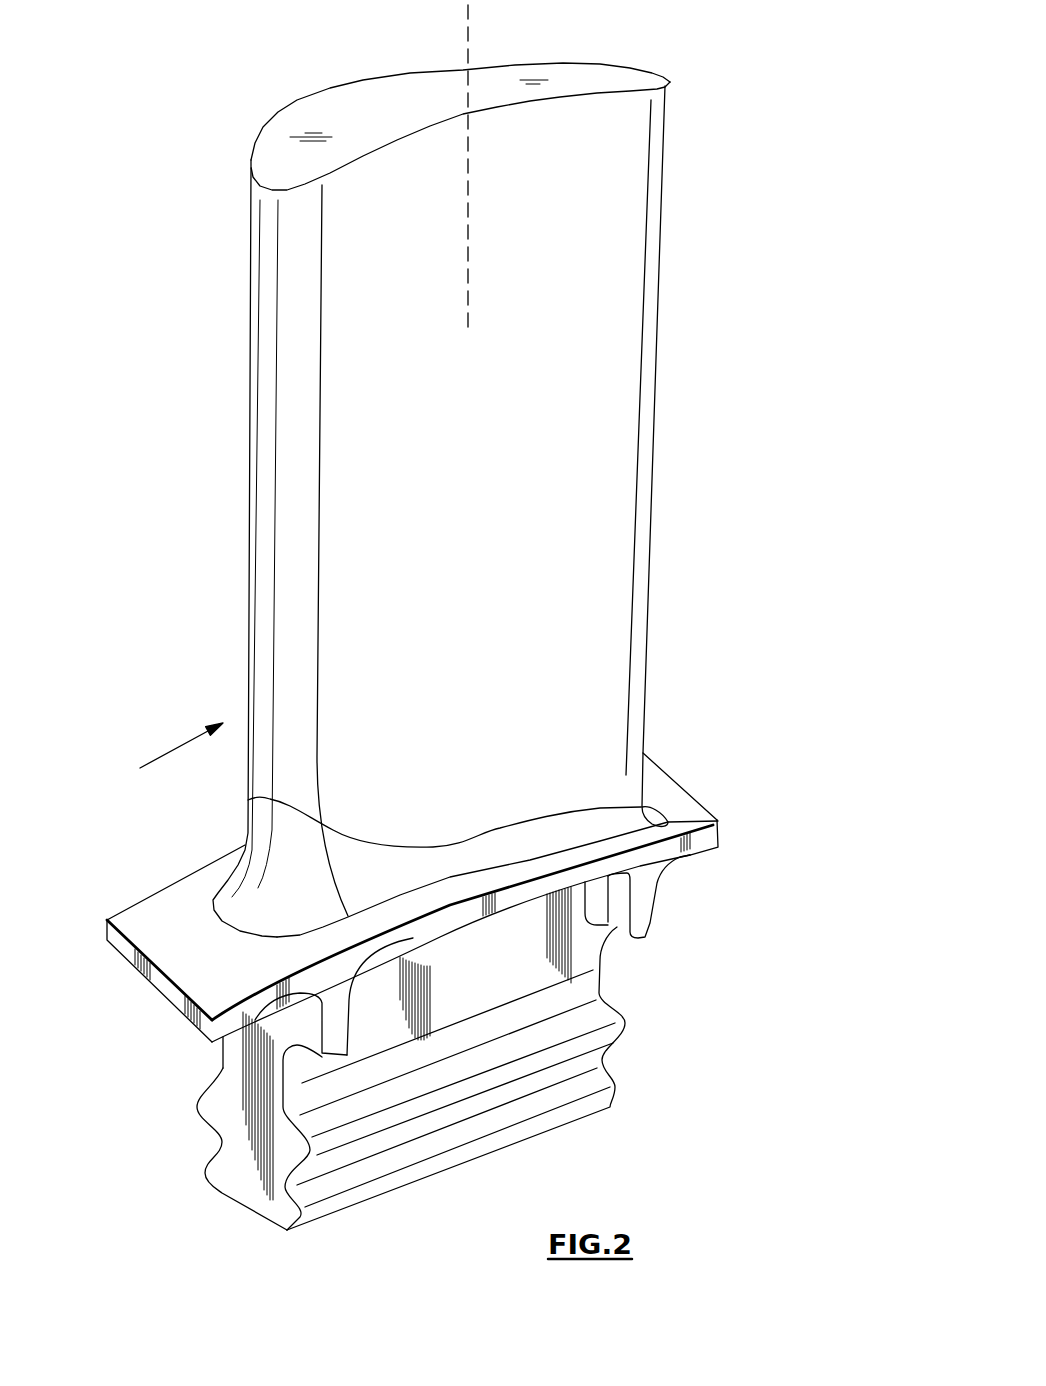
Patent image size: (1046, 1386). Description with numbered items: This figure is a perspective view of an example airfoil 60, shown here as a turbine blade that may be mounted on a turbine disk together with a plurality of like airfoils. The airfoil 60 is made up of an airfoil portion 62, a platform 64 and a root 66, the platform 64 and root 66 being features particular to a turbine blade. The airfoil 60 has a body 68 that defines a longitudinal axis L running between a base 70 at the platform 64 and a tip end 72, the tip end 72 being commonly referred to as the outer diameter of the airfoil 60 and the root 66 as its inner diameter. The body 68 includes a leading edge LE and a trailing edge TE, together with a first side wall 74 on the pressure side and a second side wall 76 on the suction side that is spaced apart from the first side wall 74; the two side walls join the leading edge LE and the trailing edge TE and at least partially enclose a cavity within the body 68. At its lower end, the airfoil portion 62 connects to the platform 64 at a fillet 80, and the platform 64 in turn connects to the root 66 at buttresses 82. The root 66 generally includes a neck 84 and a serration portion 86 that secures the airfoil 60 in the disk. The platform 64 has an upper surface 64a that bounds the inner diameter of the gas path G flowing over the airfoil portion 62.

The airfoil 60 is at (118, 675).
The airfoil portion 62 is at (457, 476).
The platform 64 is at (445, 881).
The upper surface 64a is at (658, 792).
The root 66 is at (445, 1095).
The body 68 is at (612, 678).
The base 70 is at (162, 983).
The tip end 72 is at (460, 103).
The first side wall 74 is at (632, 117).
The second side wall 76 is at (568, 63).
The fillet 80 is at (263, 845).
The buttresses 82 is at (330, 1022).
The neck 84 is at (537, 928).
The serration portion 86 is at (313, 1167).
The leading edge LE is at (234, 269).
The trailing edge TE is at (685, 446).
The longitudinal axis L is at (468, 238).
The gas path G is at (175, 748).